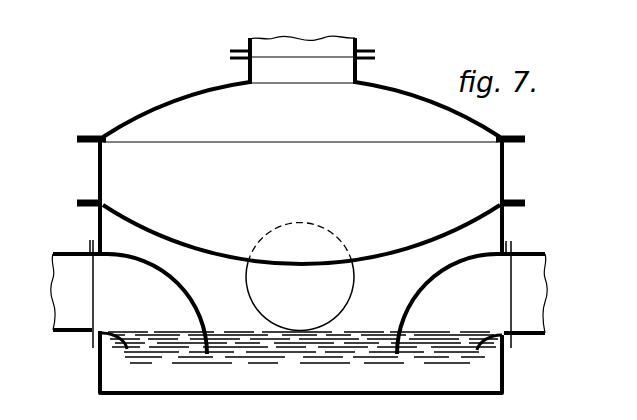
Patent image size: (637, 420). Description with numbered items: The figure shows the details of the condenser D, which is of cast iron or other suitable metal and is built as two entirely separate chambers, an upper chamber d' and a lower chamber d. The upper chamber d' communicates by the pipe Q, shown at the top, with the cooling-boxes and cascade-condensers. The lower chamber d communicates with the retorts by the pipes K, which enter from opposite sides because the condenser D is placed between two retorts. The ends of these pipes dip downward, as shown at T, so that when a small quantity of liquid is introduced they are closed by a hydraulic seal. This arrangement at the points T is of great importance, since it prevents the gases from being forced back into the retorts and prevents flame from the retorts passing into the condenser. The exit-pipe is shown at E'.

The pipe Q is at (302, 37).
The condenser D is at (289, 196).
The upper chamber d' is at (301, 120).
The lower chamber d is at (301, 259).
The exit-pipe E' is at (300, 277).
The pipes K is at (300, 294).
The downward-dipping pipe ends T is at (302, 304).